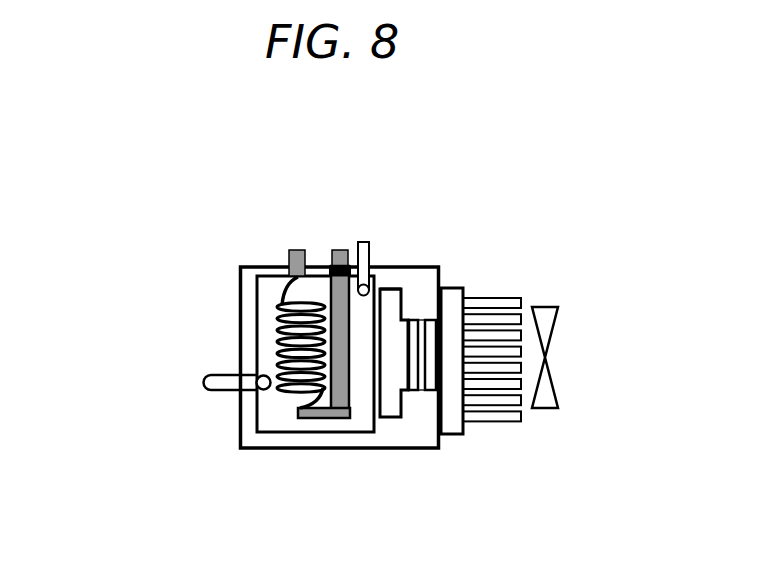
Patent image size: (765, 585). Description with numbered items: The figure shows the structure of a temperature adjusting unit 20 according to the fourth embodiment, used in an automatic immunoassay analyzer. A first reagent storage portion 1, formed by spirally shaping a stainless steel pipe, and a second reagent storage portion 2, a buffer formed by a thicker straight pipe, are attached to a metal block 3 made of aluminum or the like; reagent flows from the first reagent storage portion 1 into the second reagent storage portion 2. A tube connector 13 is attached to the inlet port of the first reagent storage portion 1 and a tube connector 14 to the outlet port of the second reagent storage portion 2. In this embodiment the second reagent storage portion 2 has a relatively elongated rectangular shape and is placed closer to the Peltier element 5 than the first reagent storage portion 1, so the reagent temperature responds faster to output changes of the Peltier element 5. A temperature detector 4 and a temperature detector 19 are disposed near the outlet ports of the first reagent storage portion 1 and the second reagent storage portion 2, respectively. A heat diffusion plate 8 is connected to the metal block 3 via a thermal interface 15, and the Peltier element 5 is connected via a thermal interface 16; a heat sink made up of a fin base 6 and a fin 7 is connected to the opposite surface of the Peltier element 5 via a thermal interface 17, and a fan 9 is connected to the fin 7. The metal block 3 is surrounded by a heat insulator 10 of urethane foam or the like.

The temperature adjusting unit 20 is at (95, 114).
The heat insulator 10 is at (313, 287).
The metal block 3 is at (265, 335).
The tube connector 13 is at (271, 193).
The tube connector 14 is at (315, 188).
The second reagent storage portion 2 is at (297, 404).
The temperature detector 19 is at (385, 195).
The first reagent storage portion 1 is at (228, 342).
The temperature detector 4 is at (186, 352).
The heat diffusion plate 8 is at (368, 427).
The thermal interface 15 is at (404, 214).
The thermal interface 16 is at (398, 439).
The thermal interface 17 is at (430, 288).
The Peltier element 5 is at (434, 438).
The fin base 6 is at (502, 400).
The fin 7 is at (521, 330).
The fan 9 is at (577, 357).